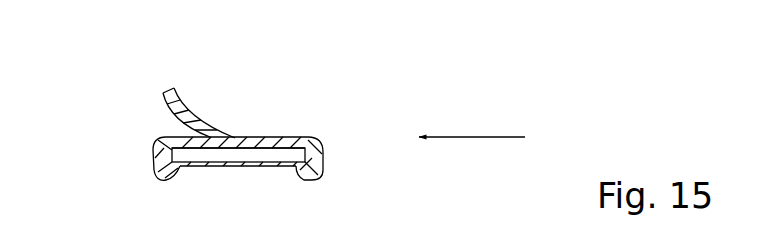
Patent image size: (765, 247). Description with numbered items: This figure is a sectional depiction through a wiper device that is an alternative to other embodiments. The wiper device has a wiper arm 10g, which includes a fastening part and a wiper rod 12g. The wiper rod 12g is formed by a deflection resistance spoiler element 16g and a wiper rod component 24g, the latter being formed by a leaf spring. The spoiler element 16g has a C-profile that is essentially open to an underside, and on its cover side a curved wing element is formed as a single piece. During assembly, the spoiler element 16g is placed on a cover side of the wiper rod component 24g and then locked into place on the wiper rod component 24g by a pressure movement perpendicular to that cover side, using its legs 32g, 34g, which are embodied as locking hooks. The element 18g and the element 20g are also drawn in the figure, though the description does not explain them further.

The wiper arm 10g is at (142, 122).
The wiper rod 12g is at (247, 133).
The spoiler element 16g is at (213, 118).
The carrier insert 18g is at (287, 168).
The direction of movement 20g is at (472, 137).
The wiper rod component 24g is at (157, 144).
The leg 32g is at (158, 163).
The leg 34g is at (320, 172).